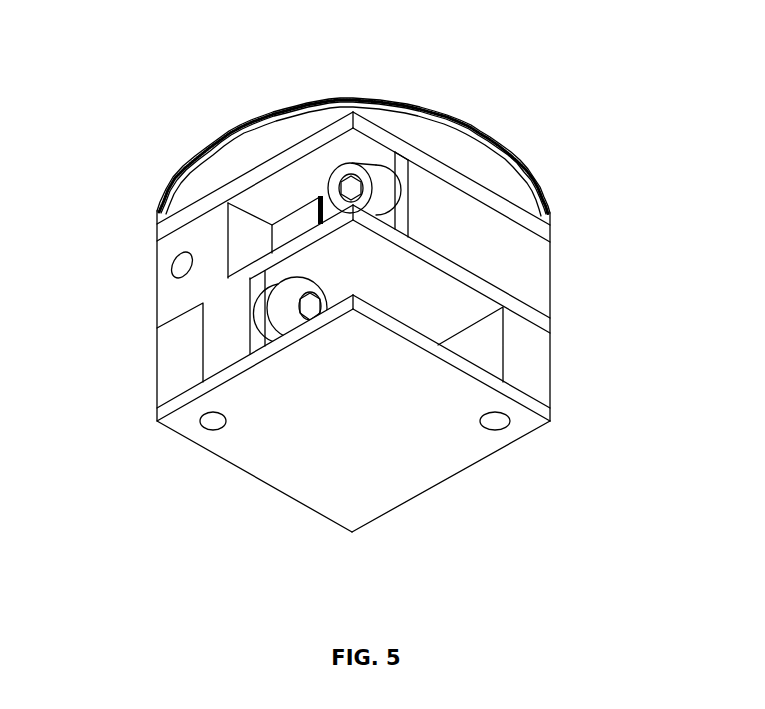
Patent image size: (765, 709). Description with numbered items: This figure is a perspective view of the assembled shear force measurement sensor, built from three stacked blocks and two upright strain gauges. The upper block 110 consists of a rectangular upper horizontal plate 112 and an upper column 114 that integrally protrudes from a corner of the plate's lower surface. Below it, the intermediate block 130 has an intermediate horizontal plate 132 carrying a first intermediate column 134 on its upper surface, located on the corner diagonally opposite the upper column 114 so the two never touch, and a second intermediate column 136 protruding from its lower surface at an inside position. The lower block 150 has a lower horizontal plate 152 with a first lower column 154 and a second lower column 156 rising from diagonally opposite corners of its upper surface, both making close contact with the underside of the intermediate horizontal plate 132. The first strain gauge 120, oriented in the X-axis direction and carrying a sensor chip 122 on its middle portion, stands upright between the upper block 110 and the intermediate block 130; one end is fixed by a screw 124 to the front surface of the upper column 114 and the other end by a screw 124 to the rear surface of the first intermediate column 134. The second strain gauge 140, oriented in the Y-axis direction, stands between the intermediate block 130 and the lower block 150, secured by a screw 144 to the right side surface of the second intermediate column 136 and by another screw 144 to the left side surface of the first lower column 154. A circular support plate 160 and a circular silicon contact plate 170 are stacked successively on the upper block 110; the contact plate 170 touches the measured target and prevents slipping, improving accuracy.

The upper block 110 is at (557, 291).
The upper horizontal plate 112 is at (358, 143).
The upper column 114 is at (522, 275).
The first strain gauge 120 is at (412, 205).
The sensor chip 122 is at (297, 217).
The screw 124 is at (343, 178).
The intermediate block 130 is at (158, 308).
The intermediate horizontal plate 132 is at (467, 307).
The first intermediate column 134 is at (170, 295).
The second intermediate column 136 is at (208, 320).
The second strain gauge 140 is at (225, 393).
The screw 144 is at (283, 318).
The lower block 150 is at (403, 512).
The lower horizontal plate 152 is at (420, 471).
The first lower column 154 is at (540, 377).
The second lower column 156 is at (246, 331).
The circular support plate 160 is at (470, 145).
The circular silicon contact plate 170 is at (427, 101).